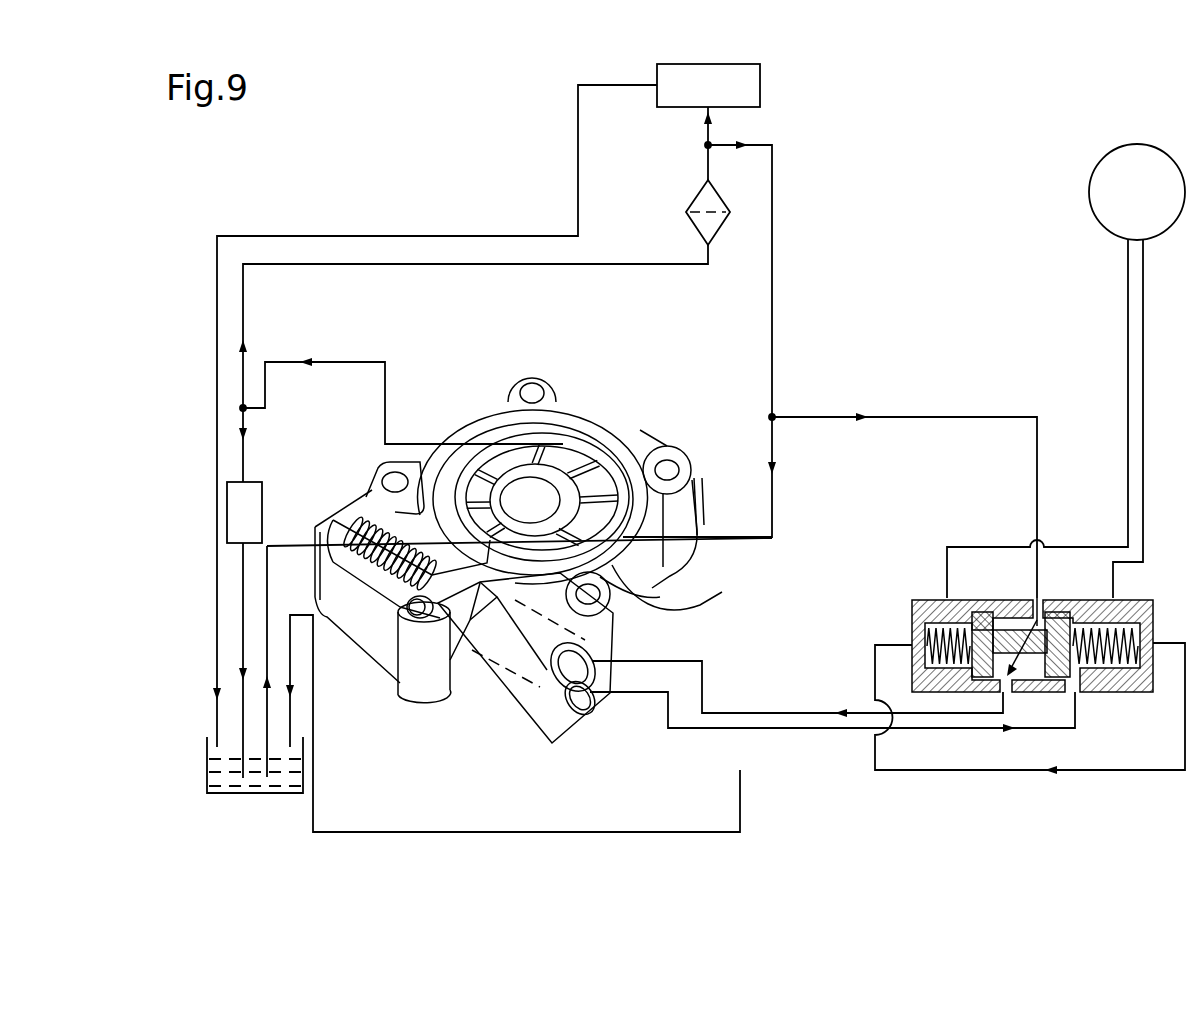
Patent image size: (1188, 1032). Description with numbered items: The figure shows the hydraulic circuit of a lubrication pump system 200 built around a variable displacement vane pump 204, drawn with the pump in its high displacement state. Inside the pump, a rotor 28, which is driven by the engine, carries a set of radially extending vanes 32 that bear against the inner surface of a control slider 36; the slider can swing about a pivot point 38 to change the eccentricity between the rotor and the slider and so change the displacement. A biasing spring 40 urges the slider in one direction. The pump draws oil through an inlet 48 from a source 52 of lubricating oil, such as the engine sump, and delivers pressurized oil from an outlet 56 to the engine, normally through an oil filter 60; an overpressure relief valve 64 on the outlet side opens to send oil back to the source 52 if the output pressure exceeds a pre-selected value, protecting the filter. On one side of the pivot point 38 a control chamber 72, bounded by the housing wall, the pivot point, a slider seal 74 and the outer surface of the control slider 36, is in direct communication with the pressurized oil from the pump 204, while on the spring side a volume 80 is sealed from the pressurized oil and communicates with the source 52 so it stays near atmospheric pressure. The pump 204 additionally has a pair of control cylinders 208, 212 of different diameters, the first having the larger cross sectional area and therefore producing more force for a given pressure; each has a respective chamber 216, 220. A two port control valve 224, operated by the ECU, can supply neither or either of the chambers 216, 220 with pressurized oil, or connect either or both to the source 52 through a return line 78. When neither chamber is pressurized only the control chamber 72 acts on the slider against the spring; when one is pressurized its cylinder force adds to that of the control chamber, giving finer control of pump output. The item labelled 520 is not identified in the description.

The lubrication pump system 200 is at (321, 182).
The variable displacement vane pump 204 is at (492, 405).
The rotor 28 is at (635, 450).
The vanes 32 is at (650, 460).
The control slider 36 is at (420, 462).
The pivot point 38 is at (578, 432).
The biasing spring 40 is at (373, 597).
The inlet 48 is at (353, 523).
The source of lubricating oil 52 is at (207, 757).
The outlet 56 is at (582, 420).
The oil filter 60 is at (690, 212).
The overpressure relief valve 64 is at (262, 492).
The control chamber 72 is at (690, 478).
The slider seal 74 is at (607, 577).
The return line 78 is at (564, 723).
The volume 80 is at (477, 433).
The control cylinder 208 is at (498, 633).
The control cylinder 212 is at (518, 680).
The chamber 216 is at (605, 648).
The chamber 220 is at (557, 707).
The two port control valve 224 is at (1105, 698).
The control valve 520 is at (922, 605).